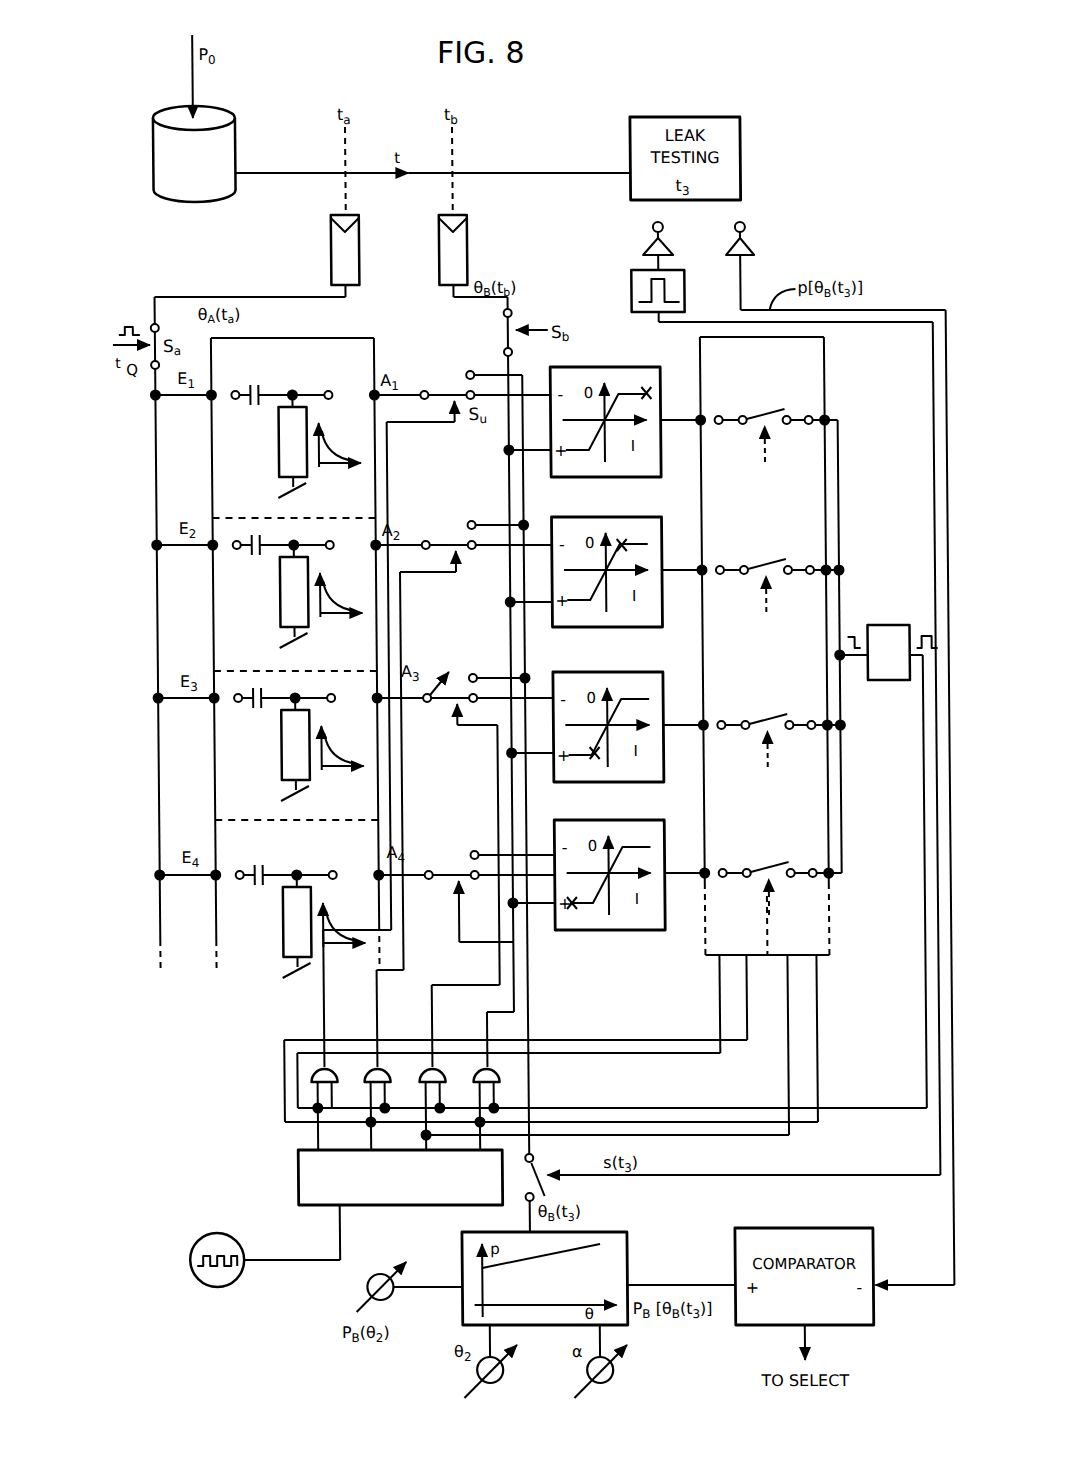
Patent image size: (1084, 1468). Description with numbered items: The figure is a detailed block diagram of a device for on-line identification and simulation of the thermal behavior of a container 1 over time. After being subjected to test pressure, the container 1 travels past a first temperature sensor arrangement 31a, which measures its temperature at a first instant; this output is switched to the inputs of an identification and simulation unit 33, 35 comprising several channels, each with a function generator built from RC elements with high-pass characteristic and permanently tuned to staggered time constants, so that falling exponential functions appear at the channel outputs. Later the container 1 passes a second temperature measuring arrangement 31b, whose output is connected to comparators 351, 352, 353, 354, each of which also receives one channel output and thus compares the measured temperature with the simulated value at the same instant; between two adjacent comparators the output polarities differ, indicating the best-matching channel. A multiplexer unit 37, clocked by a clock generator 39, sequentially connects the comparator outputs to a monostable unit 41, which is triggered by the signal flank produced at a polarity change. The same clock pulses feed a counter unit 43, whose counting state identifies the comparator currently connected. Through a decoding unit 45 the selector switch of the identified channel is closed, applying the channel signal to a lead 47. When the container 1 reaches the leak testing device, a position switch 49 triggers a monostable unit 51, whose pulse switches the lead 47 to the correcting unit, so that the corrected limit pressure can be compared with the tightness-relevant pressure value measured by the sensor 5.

The container 1 is at (182, 187).
The first temperature sensor arrangement 31a is at (343, 250).
The second temperature measuring arrangement 31b is at (453, 250).
The position switch 49 is at (644, 247).
The sensor 5 is at (756, 246).
The monostable unit 51 is at (685, 300).
The comparator 351 is at (583, 367).
The comparator 352 is at (590, 517).
The comparator 353 is at (605, 672).
The comparator 354 is at (608, 820).
The multiplexer unit 37 is at (824, 380).
The monostable unit 41 is at (880, 625).
The identification and simulation unit 33 is at (350, 669).
The identification and simulation unit 35 is at (207, 902).
The decoding unit 45 is at (303, 1085).
The lead 47 is at (527, 1152).
The clock generator 39 is at (207, 1233).
The counter unit 43 is at (432, 1205).